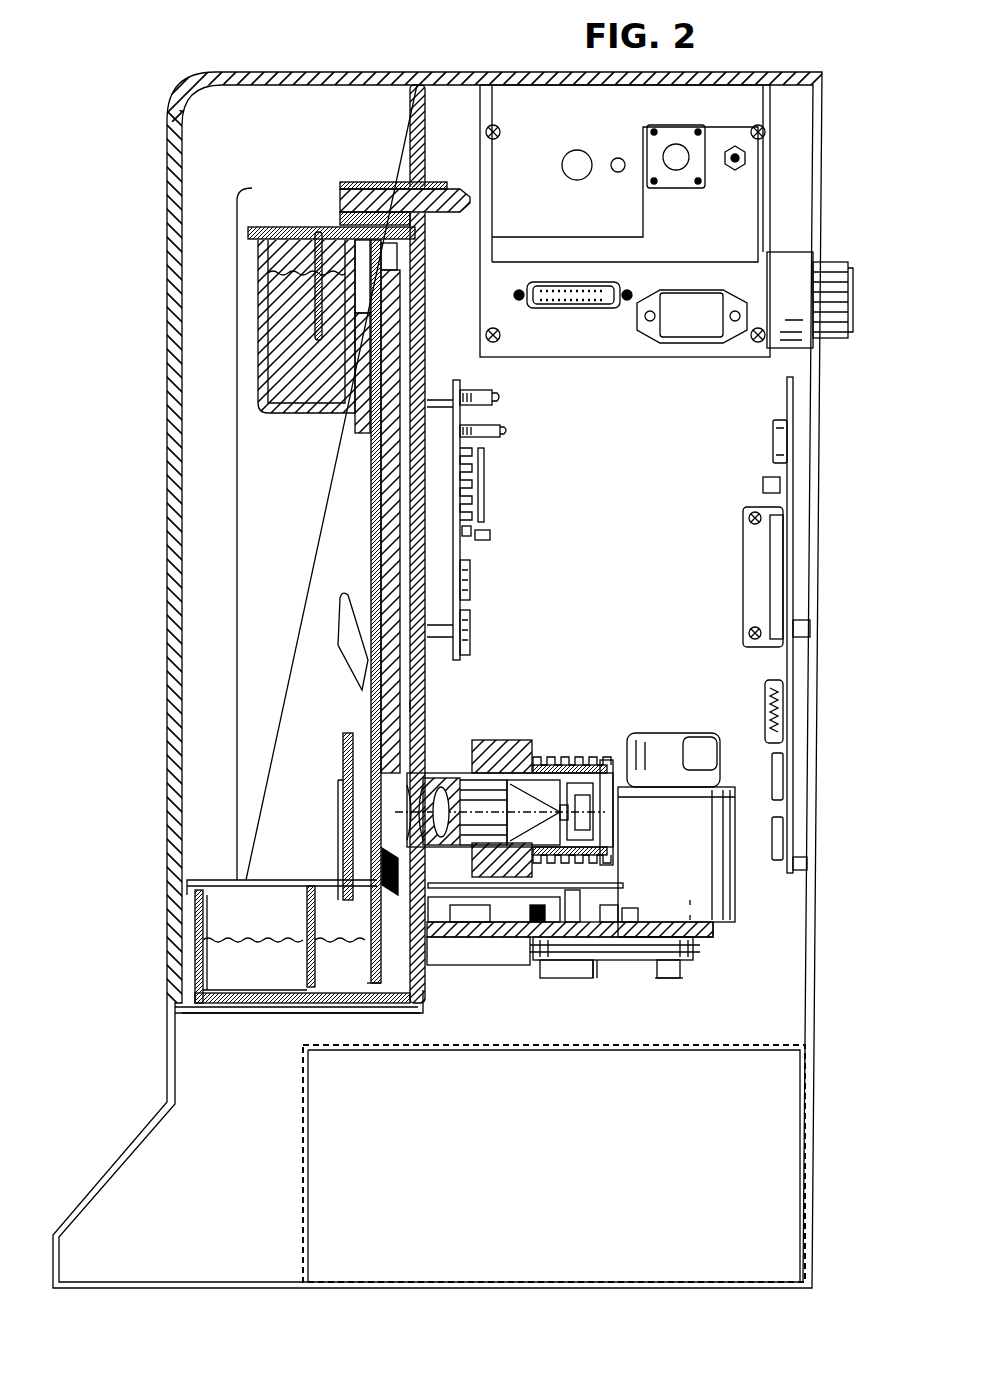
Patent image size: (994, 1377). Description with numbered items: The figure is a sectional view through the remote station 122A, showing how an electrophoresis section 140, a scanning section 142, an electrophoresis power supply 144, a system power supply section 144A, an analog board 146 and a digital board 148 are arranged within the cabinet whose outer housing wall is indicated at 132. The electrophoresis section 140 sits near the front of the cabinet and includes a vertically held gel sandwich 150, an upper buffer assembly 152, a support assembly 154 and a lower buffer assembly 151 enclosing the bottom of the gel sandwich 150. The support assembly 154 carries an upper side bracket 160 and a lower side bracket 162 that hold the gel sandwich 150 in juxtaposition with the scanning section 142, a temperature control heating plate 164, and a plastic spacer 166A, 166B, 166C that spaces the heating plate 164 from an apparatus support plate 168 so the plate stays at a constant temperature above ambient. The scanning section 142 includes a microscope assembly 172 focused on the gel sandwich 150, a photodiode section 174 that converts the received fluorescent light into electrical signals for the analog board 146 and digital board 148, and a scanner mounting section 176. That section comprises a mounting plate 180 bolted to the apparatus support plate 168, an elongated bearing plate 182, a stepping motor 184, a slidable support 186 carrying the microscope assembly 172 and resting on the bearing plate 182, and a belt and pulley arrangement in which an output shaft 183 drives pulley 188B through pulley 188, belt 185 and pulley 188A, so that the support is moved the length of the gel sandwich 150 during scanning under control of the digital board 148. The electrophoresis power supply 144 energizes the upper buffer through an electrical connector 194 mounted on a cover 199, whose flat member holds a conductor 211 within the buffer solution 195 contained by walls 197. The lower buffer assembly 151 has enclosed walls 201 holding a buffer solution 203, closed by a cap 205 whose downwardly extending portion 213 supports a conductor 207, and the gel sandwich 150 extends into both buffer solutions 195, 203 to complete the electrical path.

The remote station 122A is at (362, 36).
The housing 132 is at (243, 72).
The electrophoresis section 140 is at (237, 513).
The scanning section 142 is at (730, 712).
The electrophoresis power supply 144 is at (630, 372).
The system power supply section 144A is at (760, 1147).
The analog board 146 is at (498, 497).
The digital board 148 is at (742, 486).
The gel sandwich 150 is at (392, 990).
The lower buffer assembly 151 is at (213, 870).
The upper buffer assembly 152 is at (310, 425).
The support assembly 154 is at (437, 363).
The upper side bracket 160 is at (350, 648).
The lower side bracket 162 is at (343, 820).
The temperature control heating plate 164 is at (383, 548).
The plastic spacer 166A is at (390, 868).
The plastic spacer 166B is at (423, 707).
The plastic spacer 166C is at (428, 272).
The apparatus support plate 168 is at (423, 993).
The microscope assembly 172 is at (478, 752).
The photodiode section 174 is at (580, 748).
The scanner mounting section 176 is at (593, 972).
The mounting plate 180 is at (502, 938).
The bearing plate 182 is at (482, 912).
The output shaft 183 is at (680, 980).
The stepping motor 184 is at (732, 905).
The belt 185 is at (636, 948).
The slidable support 186 is at (565, 885).
The pulley 188 is at (690, 967).
The pulley 188A is at (555, 975).
The pulley 188B is at (598, 975).
The electrical connector 194 is at (345, 185).
The buffer solution 195 is at (333, 378).
The walls 197 is at (258, 375).
The cover 199 is at (318, 228).
The enclosed walls 201 is at (235, 1013).
The buffer solution 203 is at (220, 967).
The cap 205 is at (292, 895).
The conductor 207 is at (313, 933).
The conductor 211 is at (320, 333).
The downwardly extending portion 213 is at (307, 975).